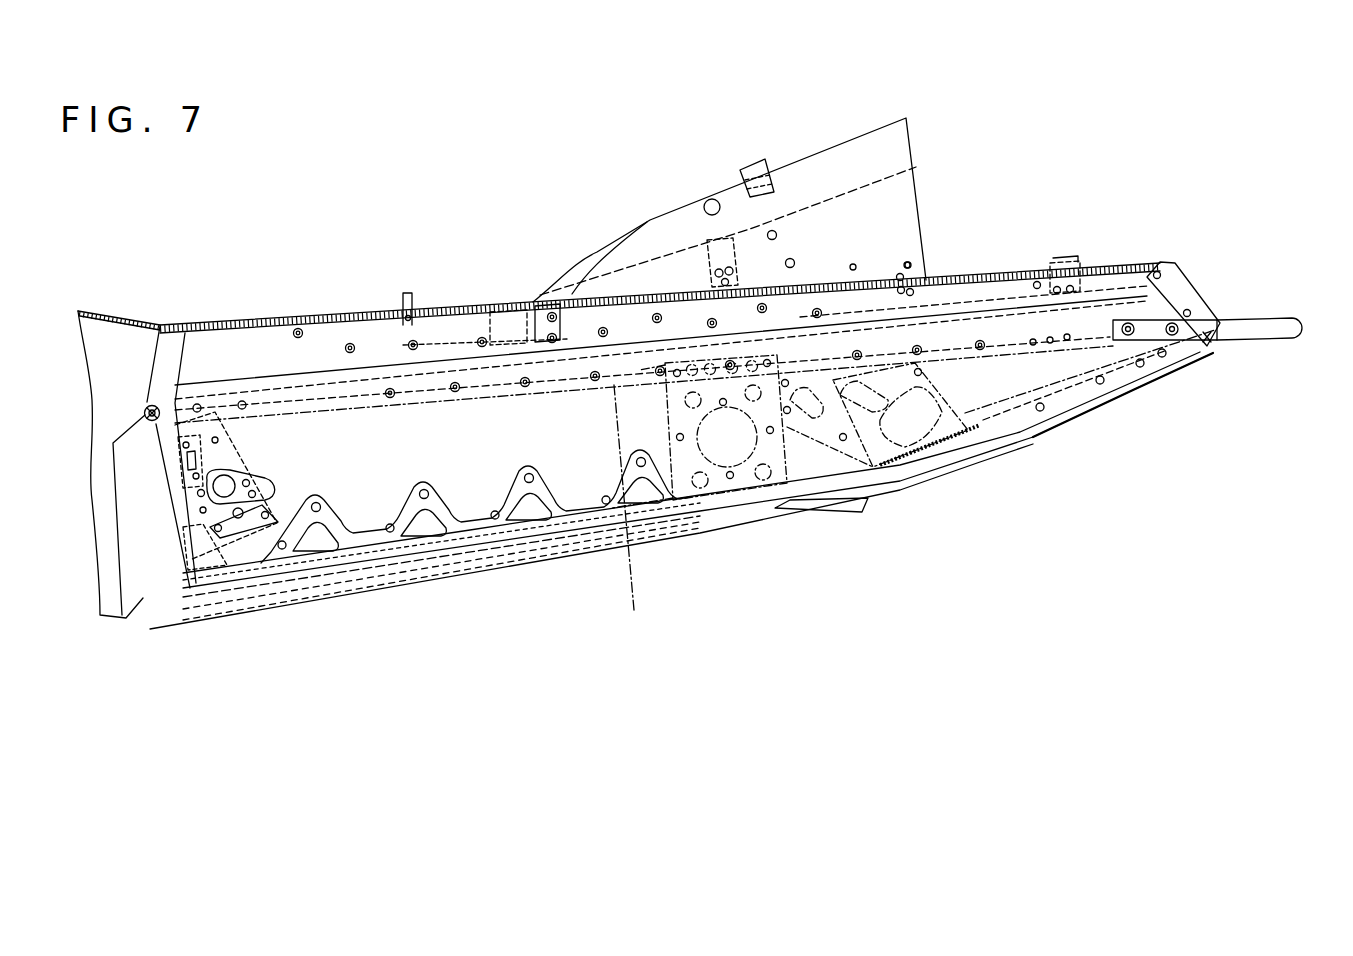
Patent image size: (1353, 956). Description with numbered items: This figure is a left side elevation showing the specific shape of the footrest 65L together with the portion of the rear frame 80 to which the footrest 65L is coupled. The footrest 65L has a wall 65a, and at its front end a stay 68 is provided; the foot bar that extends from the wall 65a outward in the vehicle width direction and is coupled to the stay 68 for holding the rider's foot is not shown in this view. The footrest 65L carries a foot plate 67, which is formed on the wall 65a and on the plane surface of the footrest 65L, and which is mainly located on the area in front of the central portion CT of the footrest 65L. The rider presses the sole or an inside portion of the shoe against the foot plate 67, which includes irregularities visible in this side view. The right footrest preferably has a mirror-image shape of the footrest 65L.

The rear frame 80 is at (1100, 267).
The wall 65a is at (290, 448).
The stay 68 is at (143, 570).
The foot plate 67 is at (470, 568).
The footrest 65L is at (1037, 440).
The central portion CT is at (632, 575).